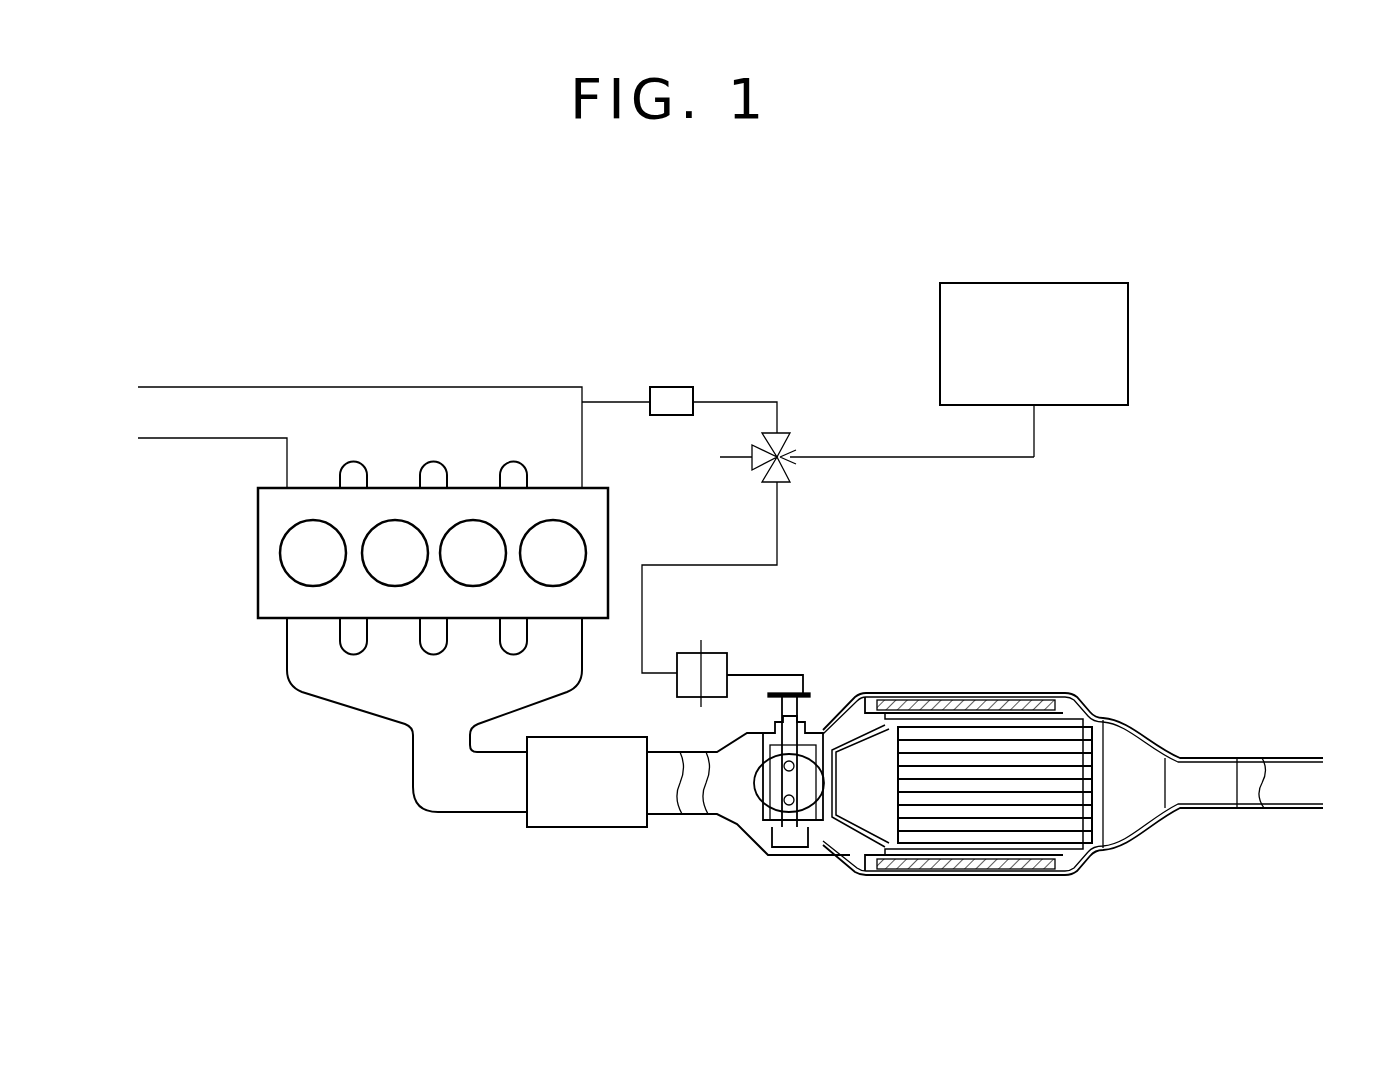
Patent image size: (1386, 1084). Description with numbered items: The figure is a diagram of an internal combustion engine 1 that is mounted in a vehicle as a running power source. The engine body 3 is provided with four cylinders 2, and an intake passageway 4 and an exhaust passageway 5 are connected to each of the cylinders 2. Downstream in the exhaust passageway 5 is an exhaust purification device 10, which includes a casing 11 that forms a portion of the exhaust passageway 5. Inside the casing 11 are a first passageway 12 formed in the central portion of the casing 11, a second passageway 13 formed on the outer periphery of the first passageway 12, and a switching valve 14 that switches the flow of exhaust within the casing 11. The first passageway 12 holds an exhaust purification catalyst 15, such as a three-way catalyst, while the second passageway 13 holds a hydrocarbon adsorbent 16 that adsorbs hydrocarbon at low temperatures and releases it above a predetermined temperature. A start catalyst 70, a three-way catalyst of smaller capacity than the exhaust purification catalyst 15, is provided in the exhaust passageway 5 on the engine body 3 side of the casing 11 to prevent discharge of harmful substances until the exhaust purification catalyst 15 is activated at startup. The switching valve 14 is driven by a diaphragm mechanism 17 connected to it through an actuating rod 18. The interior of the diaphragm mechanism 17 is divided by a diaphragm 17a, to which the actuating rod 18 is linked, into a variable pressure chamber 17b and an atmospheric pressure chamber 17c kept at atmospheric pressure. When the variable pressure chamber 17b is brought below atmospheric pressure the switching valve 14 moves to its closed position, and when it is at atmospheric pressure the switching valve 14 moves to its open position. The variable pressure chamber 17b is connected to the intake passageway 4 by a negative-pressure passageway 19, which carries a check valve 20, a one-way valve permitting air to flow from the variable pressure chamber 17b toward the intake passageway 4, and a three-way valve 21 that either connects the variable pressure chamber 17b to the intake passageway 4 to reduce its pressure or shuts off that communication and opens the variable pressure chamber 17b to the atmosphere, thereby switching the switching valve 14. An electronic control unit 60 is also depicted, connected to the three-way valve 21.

The internal combustion engine 1 is at (672, 252).
The cylinders 2 is at (325, 560).
The engine body 3 is at (258, 545).
The intake passageway 4 is at (393, 393).
The exhaust passageway 5 is at (423, 753).
The exhaust purification device 10 is at (1068, 755).
The casing 11 is at (1105, 722).
The first passageway 12 is at (858, 805).
The second passageway 13 is at (880, 700).
The switching valve 14 is at (765, 790).
The exhaust purification catalyst 15 is at (962, 800).
The hydrocarbon adsorbent 16 is at (960, 703).
The diaphragm mechanism 17 is at (689, 648).
The diaphragm 17a is at (700, 677).
The variable pressure chamber 17b is at (677, 683).
The atmospheric pressure chamber 17c is at (715, 660).
The actuating rod 18 is at (785, 672).
The negative-pressure passageway 19 is at (750, 402).
The check valve 20 is at (676, 387).
The three-way valve 21 is at (805, 427).
The ECU 60 is at (1128, 322).
The start catalyst 70 is at (585, 827).